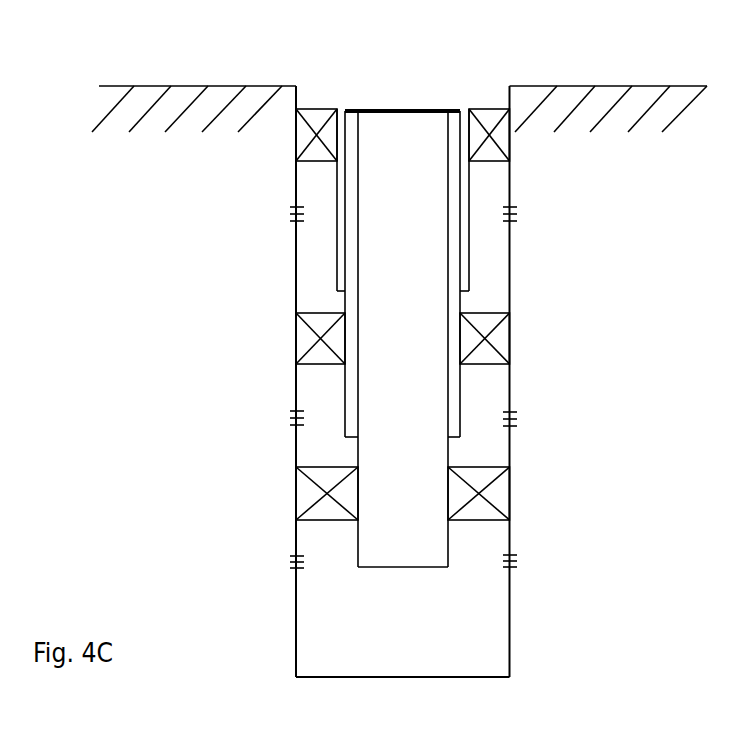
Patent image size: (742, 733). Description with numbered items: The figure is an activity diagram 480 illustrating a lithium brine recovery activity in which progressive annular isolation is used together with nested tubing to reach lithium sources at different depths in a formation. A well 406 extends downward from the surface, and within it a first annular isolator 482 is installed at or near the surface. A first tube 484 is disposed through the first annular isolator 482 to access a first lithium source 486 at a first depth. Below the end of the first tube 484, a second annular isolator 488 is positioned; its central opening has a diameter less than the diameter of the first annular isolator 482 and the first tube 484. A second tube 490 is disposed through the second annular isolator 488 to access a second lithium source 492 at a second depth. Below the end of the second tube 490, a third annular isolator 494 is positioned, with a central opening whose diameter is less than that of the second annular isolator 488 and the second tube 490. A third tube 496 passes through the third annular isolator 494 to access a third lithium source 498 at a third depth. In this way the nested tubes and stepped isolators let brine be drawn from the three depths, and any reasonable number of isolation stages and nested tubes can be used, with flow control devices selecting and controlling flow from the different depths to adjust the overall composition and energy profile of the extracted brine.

The well 406 is at (510, 178).
The activity diagram 480 is at (612, 622).
The first annular isolator 482 is at (480, 108).
The first tube 484 is at (469, 258).
The first lithium source 486 is at (293, 214).
The second annular isolator 488 is at (295, 330).
The second tube 490 is at (459, 380).
The second lithium source 492 is at (289, 417).
The third annular isolator 494 is at (508, 498).
The third tube 496 is at (432, 570).
The third lithium source 498 is at (290, 560).